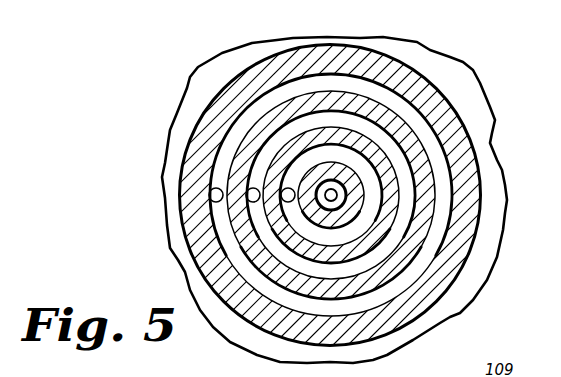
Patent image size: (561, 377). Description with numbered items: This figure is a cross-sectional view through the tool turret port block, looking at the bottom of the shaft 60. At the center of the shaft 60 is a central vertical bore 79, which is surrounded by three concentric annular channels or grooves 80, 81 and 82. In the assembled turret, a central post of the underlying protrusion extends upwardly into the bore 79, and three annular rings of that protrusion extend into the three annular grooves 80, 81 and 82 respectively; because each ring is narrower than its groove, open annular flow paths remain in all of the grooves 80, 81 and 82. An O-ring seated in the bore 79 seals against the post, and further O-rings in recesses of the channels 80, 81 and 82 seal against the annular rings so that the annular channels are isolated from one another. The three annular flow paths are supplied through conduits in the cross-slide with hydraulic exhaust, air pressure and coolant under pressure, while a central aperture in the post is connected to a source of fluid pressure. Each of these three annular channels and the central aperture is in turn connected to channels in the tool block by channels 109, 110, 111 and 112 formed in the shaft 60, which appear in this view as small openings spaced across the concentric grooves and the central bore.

The shaft 60 is at (501, 204).
The central vertical bore 79 is at (331, 189).
The annular groove 80 is at (325, 147).
The annular groove 81 is at (317, 116).
The annular groove 82 is at (363, 82).
The channel 109 is at (209, 195).
The channel 110 is at (247, 200).
The channel 111 is at (283, 201).
The channel 112 is at (327, 200).